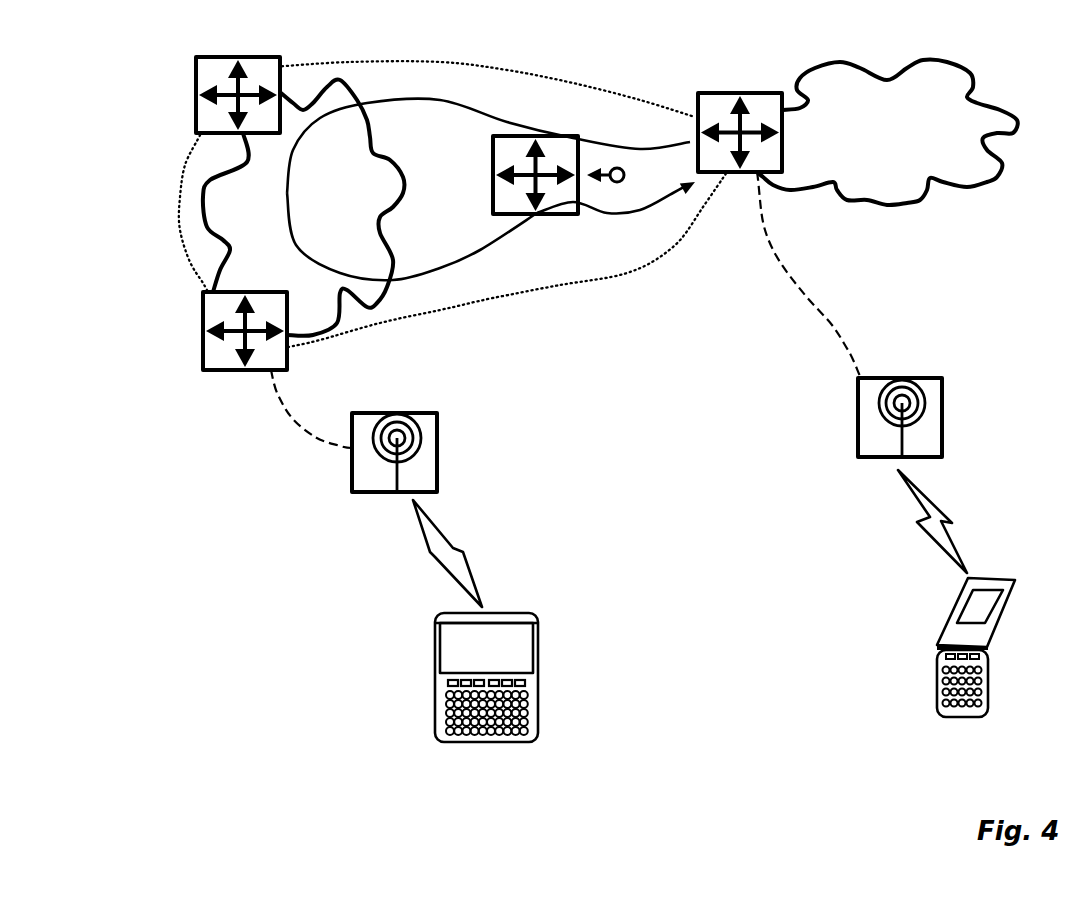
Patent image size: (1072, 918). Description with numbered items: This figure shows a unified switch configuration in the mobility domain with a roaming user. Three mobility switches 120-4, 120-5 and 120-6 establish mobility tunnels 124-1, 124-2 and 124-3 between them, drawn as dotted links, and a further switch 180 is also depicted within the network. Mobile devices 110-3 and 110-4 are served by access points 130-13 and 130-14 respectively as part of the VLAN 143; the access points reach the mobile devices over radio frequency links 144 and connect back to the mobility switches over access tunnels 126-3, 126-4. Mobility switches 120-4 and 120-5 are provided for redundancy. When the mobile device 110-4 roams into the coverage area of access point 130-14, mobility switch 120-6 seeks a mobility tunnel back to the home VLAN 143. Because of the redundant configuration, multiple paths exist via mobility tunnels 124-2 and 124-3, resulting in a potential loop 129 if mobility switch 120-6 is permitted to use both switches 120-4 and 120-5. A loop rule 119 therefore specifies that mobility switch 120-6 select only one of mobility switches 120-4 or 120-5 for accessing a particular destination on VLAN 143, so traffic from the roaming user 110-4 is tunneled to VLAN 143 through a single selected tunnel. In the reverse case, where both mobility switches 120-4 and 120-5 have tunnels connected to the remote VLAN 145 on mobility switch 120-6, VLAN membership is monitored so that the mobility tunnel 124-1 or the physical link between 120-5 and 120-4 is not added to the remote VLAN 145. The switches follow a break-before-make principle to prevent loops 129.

The mobile device 110-3 is at (538, 646).
The mobile device 110-4 is at (938, 664).
The loop rule 119 is at (624, 175).
The mobility switch 120-4 is at (202, 347).
The mobility switch 120-5 is at (196, 75).
The mobility switch 120-6 is at (718, 93).
The mobility tunnel 124-1 is at (181, 212).
The mobility tunnel 124-2 is at (556, 78).
The mobility tunnel 124-3 is at (512, 302).
The access tunnel 126-3 is at (297, 420).
The access tunnel 126-4 is at (822, 317).
The loop 129 is at (470, 258).
The access point 130-13 is at (437, 452).
The access point 130-14 is at (857, 417).
The VLAN 143 is at (285, 270).
The RF link 144 is at (448, 527).
The remote VLAN 145 is at (931, 151).
The core switch 180 is at (492, 157).